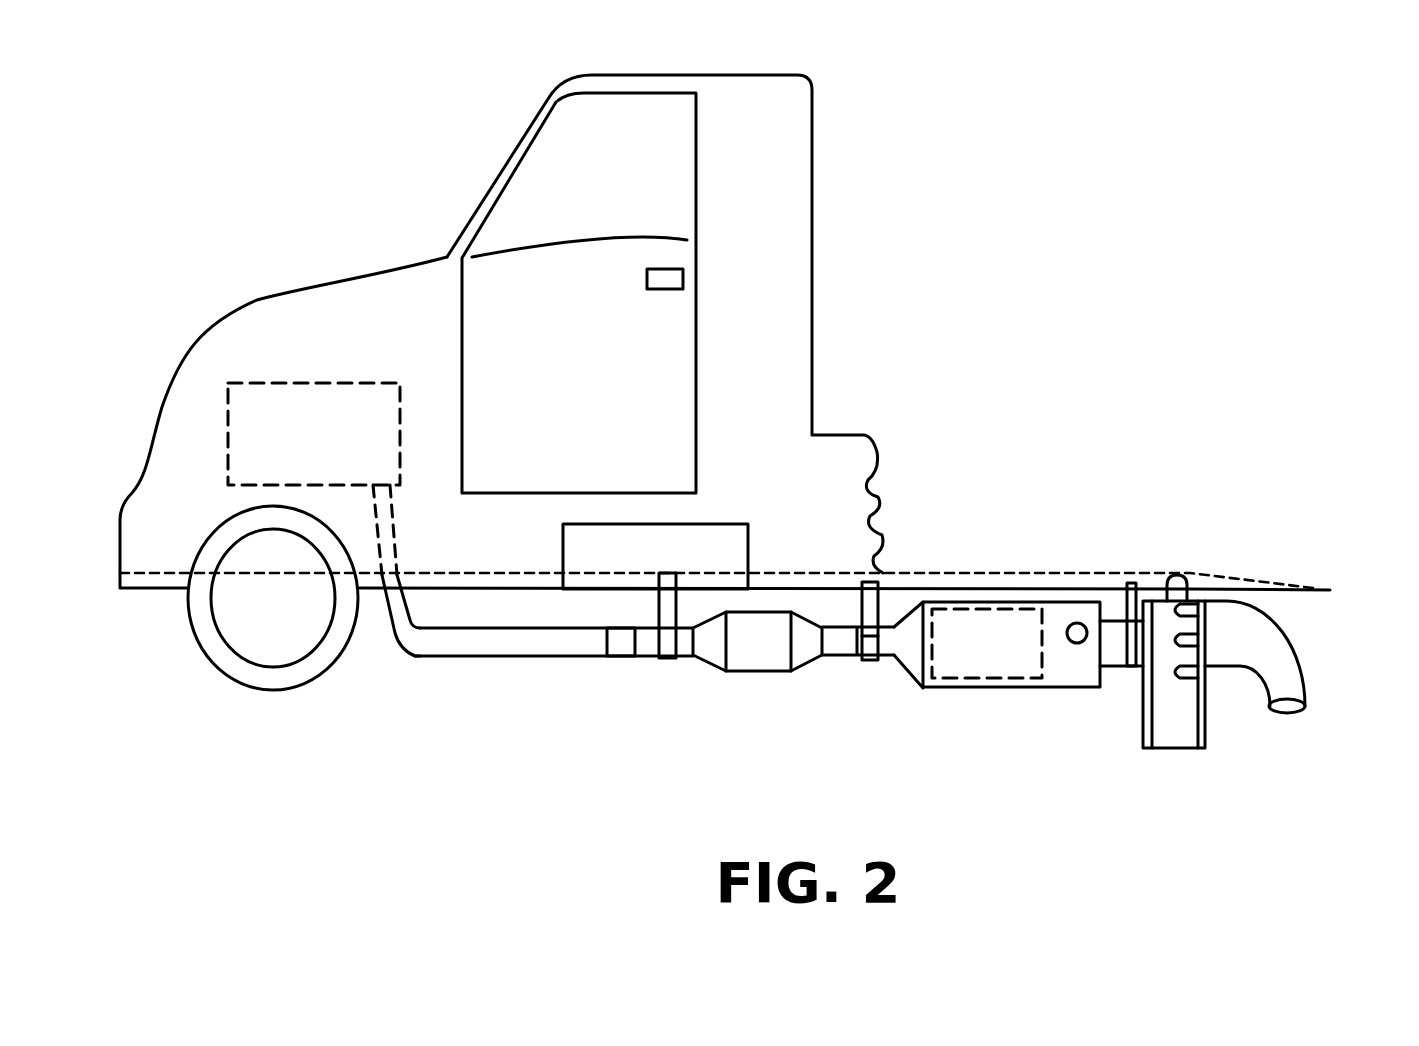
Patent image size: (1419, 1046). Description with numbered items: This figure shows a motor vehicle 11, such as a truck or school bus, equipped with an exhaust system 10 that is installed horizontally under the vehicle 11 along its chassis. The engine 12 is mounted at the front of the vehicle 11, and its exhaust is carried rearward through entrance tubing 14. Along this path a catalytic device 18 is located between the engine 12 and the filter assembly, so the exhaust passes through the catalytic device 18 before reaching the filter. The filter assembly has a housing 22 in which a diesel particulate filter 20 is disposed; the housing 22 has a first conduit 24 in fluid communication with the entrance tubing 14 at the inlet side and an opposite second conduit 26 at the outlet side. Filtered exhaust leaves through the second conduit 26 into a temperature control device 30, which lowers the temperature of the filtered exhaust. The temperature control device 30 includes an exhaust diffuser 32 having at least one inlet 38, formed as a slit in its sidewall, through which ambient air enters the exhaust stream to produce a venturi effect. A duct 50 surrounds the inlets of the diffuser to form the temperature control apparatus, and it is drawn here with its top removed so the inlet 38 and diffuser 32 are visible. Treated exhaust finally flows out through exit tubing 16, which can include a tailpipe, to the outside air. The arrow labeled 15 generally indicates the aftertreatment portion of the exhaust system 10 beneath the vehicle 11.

The motor vehicle 11 is at (352, 222).
The engine 12 is at (343, 383).
The exhaust system 10 is at (437, 643).
The entrance tubing 14 is at (523, 643).
The exhaust aftertreatment system 15 is at (644, 749).
The catalytic device 18 is at (748, 646).
The first conduit 24 is at (843, 643).
The housing 22 is at (907, 662).
The diesel particulate filter 20 is at (995, 645).
The inlet 38 is at (1077, 643).
The second conduit 26 is at (1140, 663).
The duct 50 is at (1183, 723).
The exhaust diffuser 32 is at (1175, 622).
The temperature control device 30 is at (1247, 627).
The exit tubing 16 is at (1255, 660).